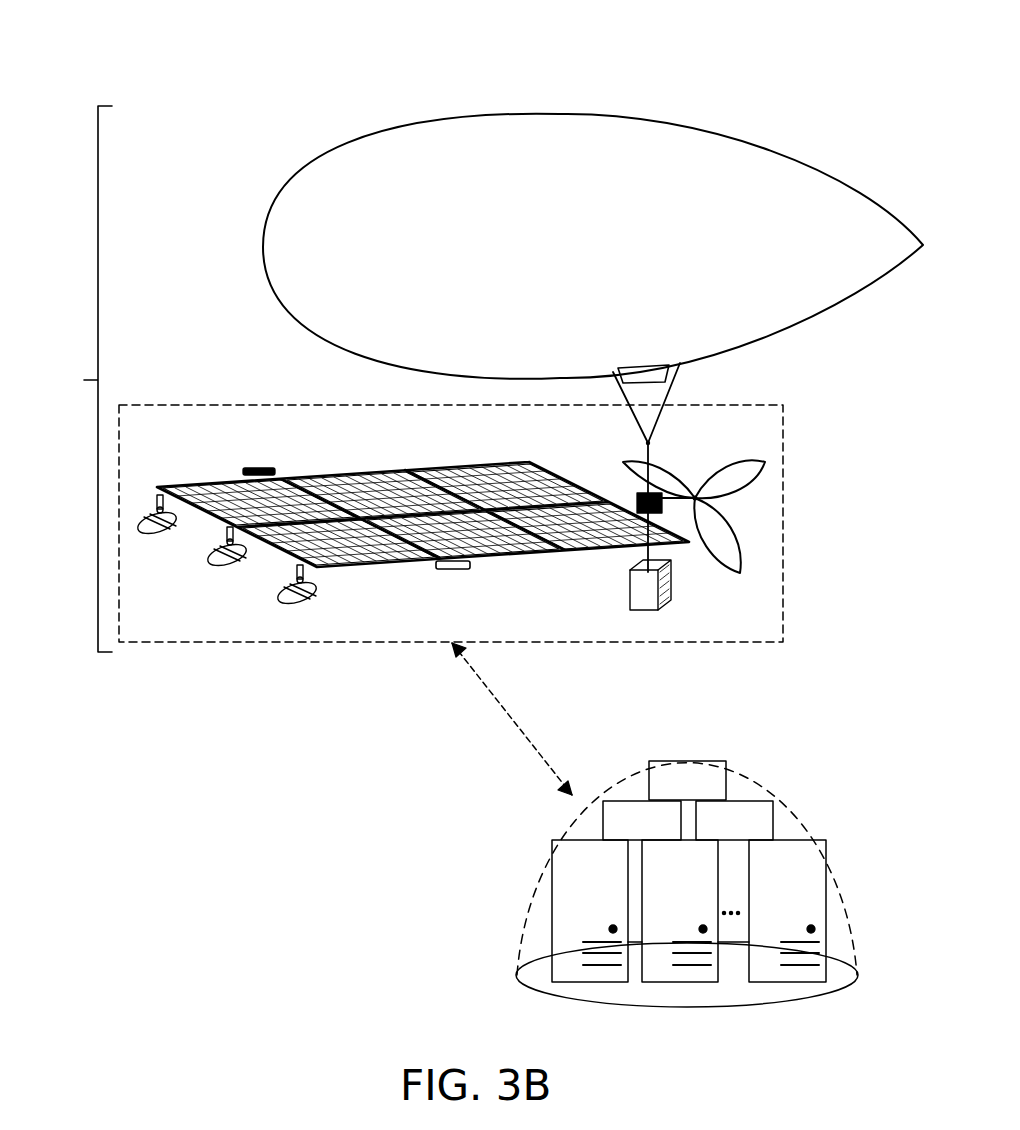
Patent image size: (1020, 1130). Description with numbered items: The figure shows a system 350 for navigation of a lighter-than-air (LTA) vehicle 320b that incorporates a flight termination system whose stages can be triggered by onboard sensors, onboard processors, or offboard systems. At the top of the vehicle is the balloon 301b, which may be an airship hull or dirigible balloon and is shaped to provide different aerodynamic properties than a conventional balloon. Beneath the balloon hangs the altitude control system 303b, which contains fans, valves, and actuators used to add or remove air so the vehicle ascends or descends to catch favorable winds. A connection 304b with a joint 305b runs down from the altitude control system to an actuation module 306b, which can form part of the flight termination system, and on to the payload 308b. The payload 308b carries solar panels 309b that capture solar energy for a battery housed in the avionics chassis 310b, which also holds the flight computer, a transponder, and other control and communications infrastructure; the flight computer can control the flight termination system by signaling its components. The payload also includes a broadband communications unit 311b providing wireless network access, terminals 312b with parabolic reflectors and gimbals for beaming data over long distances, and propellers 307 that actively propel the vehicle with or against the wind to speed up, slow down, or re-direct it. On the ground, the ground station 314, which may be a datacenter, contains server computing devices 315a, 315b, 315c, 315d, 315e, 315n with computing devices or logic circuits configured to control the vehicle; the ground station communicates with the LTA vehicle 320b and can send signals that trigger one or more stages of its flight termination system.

The system 350 is at (170, 80).
The LTA vehicle 320b is at (63, 379).
The balloon 301b is at (790, 152).
The altitude control system (ACS) 303b is at (657, 367).
The connection 304b is at (643, 448).
The joint 305b is at (655, 442).
The actuation module 306b is at (637, 496).
The propellers 307 is at (735, 560).
The payload 308b is at (451, 523).
The solar panel(s) 309b is at (455, 468).
The avionics chassis 310b is at (630, 586).
The broadband communications unit(s) 311b is at (453, 570).
The terminal(s) 312b is at (280, 604).
The ground station 314 is at (840, 858).
The server computing device 315a is at (716, 793).
The server computing device 315b is at (671, 833).
The server computing device 315c is at (763, 833).
The server computing device 315d is at (620, 873).
The server computing device 315e is at (710, 873).
The server computing device 315n is at (817, 873).